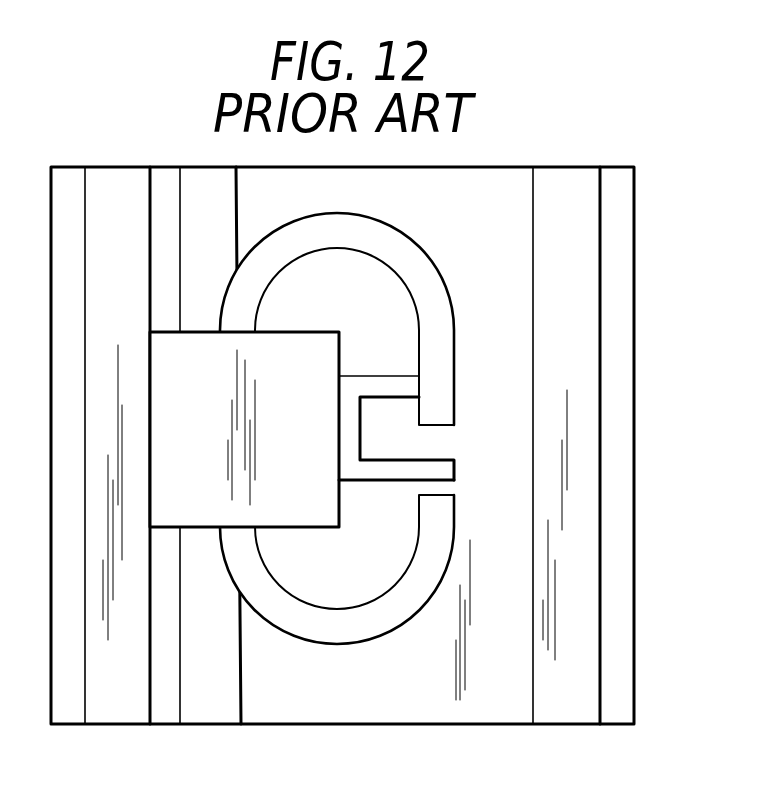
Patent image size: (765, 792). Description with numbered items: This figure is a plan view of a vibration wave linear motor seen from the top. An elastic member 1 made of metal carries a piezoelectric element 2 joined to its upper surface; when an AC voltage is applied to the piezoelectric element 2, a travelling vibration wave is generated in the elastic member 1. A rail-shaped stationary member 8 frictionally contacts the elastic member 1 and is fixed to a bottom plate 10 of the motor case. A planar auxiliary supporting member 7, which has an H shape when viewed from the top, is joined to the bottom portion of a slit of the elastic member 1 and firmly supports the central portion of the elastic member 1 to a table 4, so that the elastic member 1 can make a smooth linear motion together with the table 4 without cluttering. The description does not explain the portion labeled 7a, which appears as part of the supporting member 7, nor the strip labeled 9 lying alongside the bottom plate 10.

The elastic member 1 is at (448, 428).
The piezoelectric element 2 is at (447, 385).
The table 4 is at (167, 430).
The auxiliary supporting member 7 is at (382, 475).
The hook portion of connecting arm 7a is at (452, 470).
The stationary member 8 is at (223, 702).
The right layer 9 is at (583, 410).
The bottom plate 10 is at (617, 510).